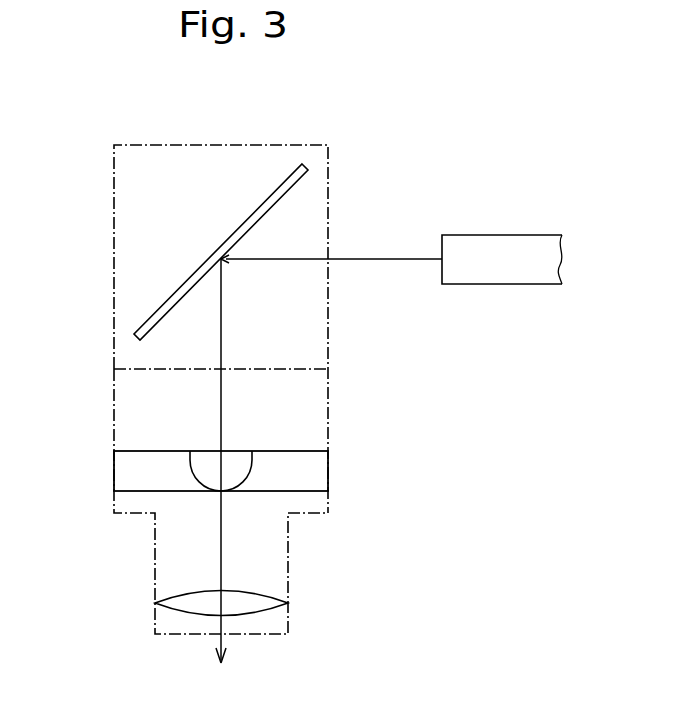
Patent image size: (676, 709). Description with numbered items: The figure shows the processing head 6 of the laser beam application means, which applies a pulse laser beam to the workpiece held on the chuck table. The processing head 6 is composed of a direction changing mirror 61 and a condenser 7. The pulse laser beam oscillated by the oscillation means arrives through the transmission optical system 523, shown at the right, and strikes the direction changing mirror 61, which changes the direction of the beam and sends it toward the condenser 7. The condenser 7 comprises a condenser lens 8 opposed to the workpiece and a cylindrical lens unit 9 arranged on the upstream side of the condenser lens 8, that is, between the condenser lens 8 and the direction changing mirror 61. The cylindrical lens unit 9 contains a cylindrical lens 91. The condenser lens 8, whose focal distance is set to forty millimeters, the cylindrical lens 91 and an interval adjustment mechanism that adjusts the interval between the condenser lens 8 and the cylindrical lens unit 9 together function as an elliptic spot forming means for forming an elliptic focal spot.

The processing head 6 is at (90, 203).
The direction changing mirror 61 is at (281, 185).
The condenser 7 is at (95, 410).
The condenser lens 8 is at (165, 603).
The cylindrical lens unit 9 is at (112, 474).
The cylindrical lens 91 is at (238, 456).
The transmission optical system 523 is at (512, 243).